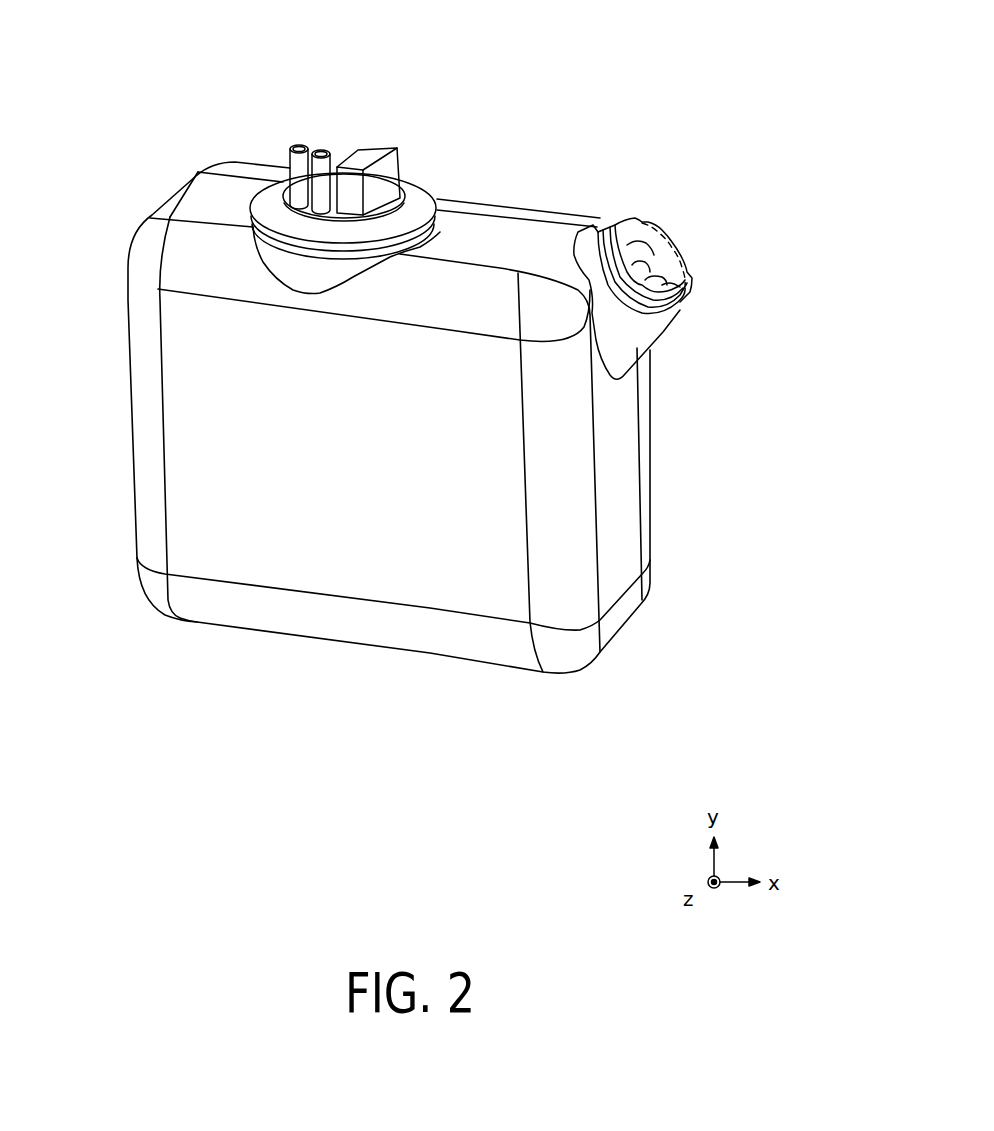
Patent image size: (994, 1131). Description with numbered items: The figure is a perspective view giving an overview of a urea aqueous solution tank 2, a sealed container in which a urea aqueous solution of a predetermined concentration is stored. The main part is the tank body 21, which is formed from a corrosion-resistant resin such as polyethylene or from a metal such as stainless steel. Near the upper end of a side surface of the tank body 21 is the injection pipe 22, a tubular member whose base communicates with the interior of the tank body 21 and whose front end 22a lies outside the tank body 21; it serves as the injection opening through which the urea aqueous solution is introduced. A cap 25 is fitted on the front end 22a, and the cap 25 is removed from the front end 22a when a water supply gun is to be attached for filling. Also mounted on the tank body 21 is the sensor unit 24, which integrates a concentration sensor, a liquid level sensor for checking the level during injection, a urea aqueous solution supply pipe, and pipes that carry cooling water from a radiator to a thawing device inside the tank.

The urea aqueous solution tank 2 is at (607, 90).
The tank body 21 is at (192, 184).
The injection pipe 22 is at (655, 335).
The front end 22a is at (688, 290).
The sensor unit 24 is at (357, 136).
The cap 25 is at (680, 260).